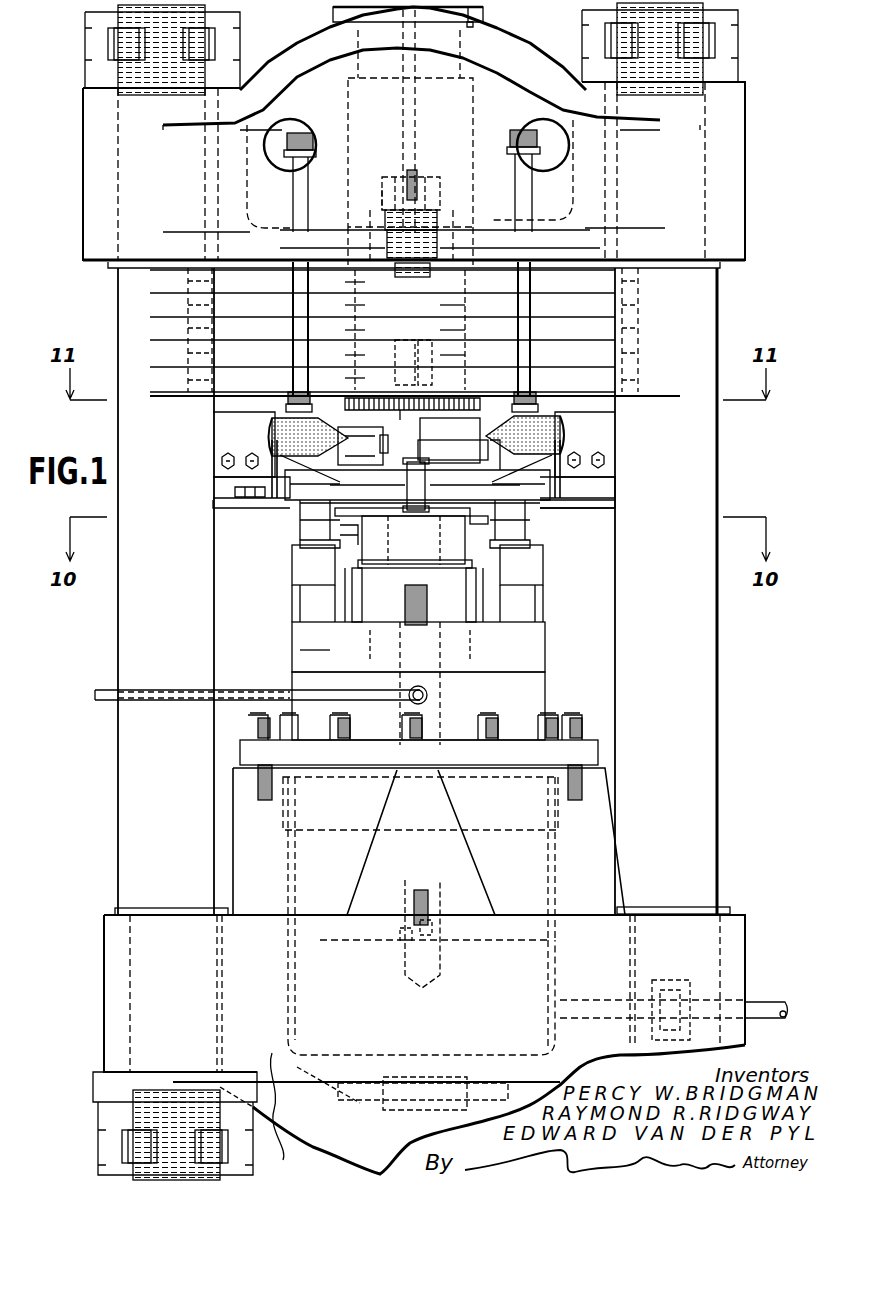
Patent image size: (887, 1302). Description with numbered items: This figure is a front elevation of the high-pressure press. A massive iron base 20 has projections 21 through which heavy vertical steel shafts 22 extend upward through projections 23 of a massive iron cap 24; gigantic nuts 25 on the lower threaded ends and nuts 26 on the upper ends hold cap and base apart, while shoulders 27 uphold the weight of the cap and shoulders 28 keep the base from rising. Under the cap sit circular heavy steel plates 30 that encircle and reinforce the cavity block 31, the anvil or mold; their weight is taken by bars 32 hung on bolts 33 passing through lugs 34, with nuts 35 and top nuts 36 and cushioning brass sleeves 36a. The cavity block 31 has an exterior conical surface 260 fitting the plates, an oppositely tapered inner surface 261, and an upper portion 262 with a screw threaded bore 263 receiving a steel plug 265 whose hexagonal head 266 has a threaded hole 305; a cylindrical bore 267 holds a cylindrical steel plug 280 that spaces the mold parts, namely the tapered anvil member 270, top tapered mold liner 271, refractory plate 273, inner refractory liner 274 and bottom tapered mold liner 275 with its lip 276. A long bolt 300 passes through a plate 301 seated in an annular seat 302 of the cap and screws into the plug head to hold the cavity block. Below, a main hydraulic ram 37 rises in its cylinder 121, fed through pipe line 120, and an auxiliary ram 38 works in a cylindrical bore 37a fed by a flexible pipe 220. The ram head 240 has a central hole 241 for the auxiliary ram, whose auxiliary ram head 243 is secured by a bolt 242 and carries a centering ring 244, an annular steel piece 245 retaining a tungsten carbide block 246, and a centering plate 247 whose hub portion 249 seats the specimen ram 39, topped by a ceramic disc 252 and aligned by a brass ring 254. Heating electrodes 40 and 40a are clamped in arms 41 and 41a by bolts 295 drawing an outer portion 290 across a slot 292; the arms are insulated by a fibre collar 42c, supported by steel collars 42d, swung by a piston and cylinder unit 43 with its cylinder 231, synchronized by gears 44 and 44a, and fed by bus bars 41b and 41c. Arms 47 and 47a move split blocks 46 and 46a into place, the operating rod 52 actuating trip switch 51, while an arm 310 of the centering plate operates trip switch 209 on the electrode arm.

The iron base 20 is at (328, 1150).
The projections 21 is at (115, 982).
The vertical steel shafts 22 is at (118, 160).
The projections 23 is at (90, 124).
The iron cap 24 is at (525, 78).
The nuts 25 is at (110, 1116).
The nuts 26 is at (95, 72).
The shoulders 27 is at (140, 262).
The shoulders 28 is at (125, 915).
The circular heavy steel plates 30 is at (210, 305).
The cavity block 31 is at (455, 245).
The bars 32 is at (292, 392).
The bolts 33 is at (300, 125).
The lugs 34 is at (288, 248).
The nuts 35 is at (290, 408).
The top nuts 36 is at (320, 145).
The brass sleeves 36a is at (268, 200).
The main hydraulic ram 37 is at (525, 694).
The cylindrical bore 37a is at (445, 960).
The auxiliary hydraulic ram 38 is at (440, 660).
The specimen ram 39 is at (432, 482).
The heating electrode 40 is at (275, 438).
The heating electrode 40a is at (556, 438).
The electrode supporting arm 41 is at (350, 496).
The electrode supporting arm 41a is at (590, 508).
The flexible bus bar 41b is at (320, 552).
The flexible bus bar 41c is at (515, 512).
The fibre collar 42c is at (330, 468).
The steel collars 42d is at (320, 512).
The piston and cylinder unit 43 is at (456, 432).
The gear 44 is at (395, 436).
The gear 44a is at (426, 389).
The split block 46 is at (305, 602).
The split block 46a is at (520, 596).
The arm 47 is at (300, 574).
The arm 47a is at (525, 564).
The trip switch 51 is at (370, 558).
The adjustable operating rod 52 is at (474, 524).
The pipe line 120 is at (762, 1006).
The cylinder 121 is at (245, 816).
The trip switch 209 is at (250, 486).
The flexible pipe 220 is at (103, 690).
The cylinder 231 is at (520, 458).
The ram head 240 is at (548, 645).
The central hole 241 is at (398, 652).
The bolt 242 is at (398, 640).
The auxiliary ram head 243 is at (445, 630).
The centering ring 244 is at (380, 582).
The annular cylindrical piece of steel 245 is at (408, 575).
The block 246 is at (452, 582).
The centering plate 247 is at (434, 516).
The hub portion 249 is at (420, 508).
The ceramic disc 252 is at (404, 441).
The brass ring 254 is at (453, 448).
The exterior conical surface 260 is at (470, 272).
The inner surface 261 is at (445, 328).
The upper portion 262 is at (455, 210).
The screw threaded bore 263 is at (368, 215).
The steel plug 265 is at (385, 280).
The hexagonal head 266 is at (398, 170).
The cylindrical bore 267 is at (445, 302).
The tapered anvil member 270 is at (385, 328).
The top tapered mold liner 271 is at (445, 352).
The refractory plate 273 is at (385, 352).
The inner refractory liner 274 is at (385, 378).
The bottom tapered mold liner 275 is at (425, 378).
The lip 276 is at (410, 378).
The cylindrical steel plug 280 is at (385, 302).
The outer portion 290 is at (222, 424).
The slot 292 is at (230, 530).
The bolts 295 is at (222, 462).
The long bolt 300 is at (440, 60).
The plate 301 is at (336, 14).
The annular seat 302 is at (482, 18).
The threaded hole 305 is at (428, 172).
The arm 310 is at (305, 536).